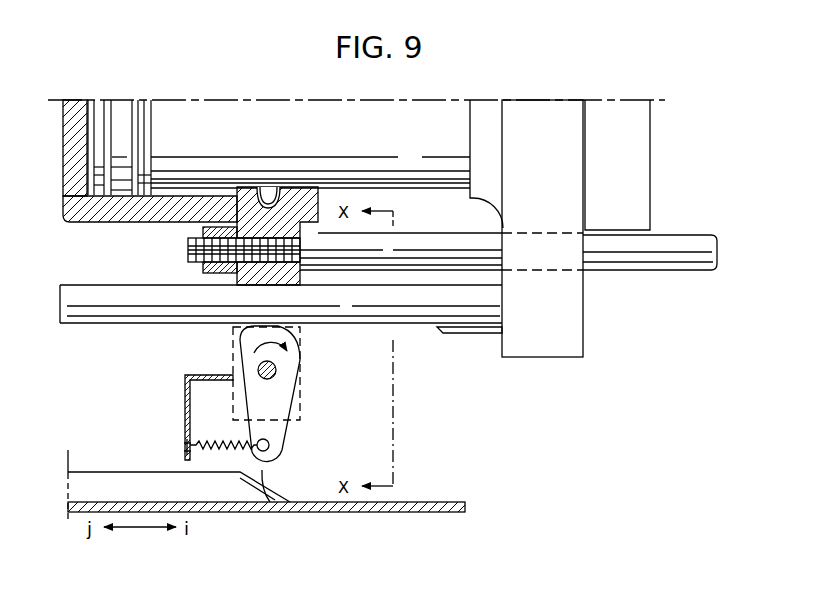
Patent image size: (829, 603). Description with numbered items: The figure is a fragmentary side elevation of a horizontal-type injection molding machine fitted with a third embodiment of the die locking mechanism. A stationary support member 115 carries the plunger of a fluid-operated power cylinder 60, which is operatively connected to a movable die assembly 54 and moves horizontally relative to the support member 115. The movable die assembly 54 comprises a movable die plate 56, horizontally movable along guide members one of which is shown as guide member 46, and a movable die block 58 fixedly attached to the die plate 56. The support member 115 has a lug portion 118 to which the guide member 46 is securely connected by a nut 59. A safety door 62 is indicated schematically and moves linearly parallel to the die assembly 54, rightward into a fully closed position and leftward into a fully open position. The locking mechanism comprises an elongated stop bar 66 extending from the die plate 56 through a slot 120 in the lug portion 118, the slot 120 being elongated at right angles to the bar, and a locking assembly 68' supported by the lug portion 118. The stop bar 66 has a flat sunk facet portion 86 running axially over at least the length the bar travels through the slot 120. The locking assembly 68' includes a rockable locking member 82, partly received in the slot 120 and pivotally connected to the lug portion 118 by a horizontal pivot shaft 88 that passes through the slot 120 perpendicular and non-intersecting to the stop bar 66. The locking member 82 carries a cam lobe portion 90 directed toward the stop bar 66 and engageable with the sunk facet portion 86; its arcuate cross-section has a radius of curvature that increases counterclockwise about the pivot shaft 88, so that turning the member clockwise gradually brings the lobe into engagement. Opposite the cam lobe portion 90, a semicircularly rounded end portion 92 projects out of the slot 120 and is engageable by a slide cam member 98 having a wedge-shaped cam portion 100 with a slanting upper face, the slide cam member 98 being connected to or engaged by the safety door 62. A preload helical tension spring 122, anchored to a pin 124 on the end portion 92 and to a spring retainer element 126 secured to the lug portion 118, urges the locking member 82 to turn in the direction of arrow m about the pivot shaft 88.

The guide member 46 is at (690, 234).
The movable die assembly 54 is at (585, 251).
The movable die plate 56 is at (541, 358).
The movable die block 58 is at (651, 140).
The nut 59 is at (205, 229).
The fluid-operated power cylinder 60 is at (259, 176).
The safety door 62 is at (415, 513).
The stop bar 66 is at (467, 335).
The locking assembly 68' is at (218, 414).
The rockable locking member 82 is at (295, 432).
The flat sunk facet portion 86 is at (396, 337).
The pivot shaft 88 is at (258, 367).
The cam lobe portion 90 is at (296, 330).
The rounded end portion 92 is at (273, 462).
The slide cam member 98 is at (83, 468).
The wedge-shaped cam portion 100 is at (267, 483).
The stationary support member 115 is at (97, 224).
The lug portion 118 is at (212, 275).
The slot 120 is at (303, 401).
The preload helical tension spring 122 is at (190, 466).
The pin 124 is at (271, 449).
The spring retainer element 126 is at (185, 390).
The arrow m is at (302, 371).